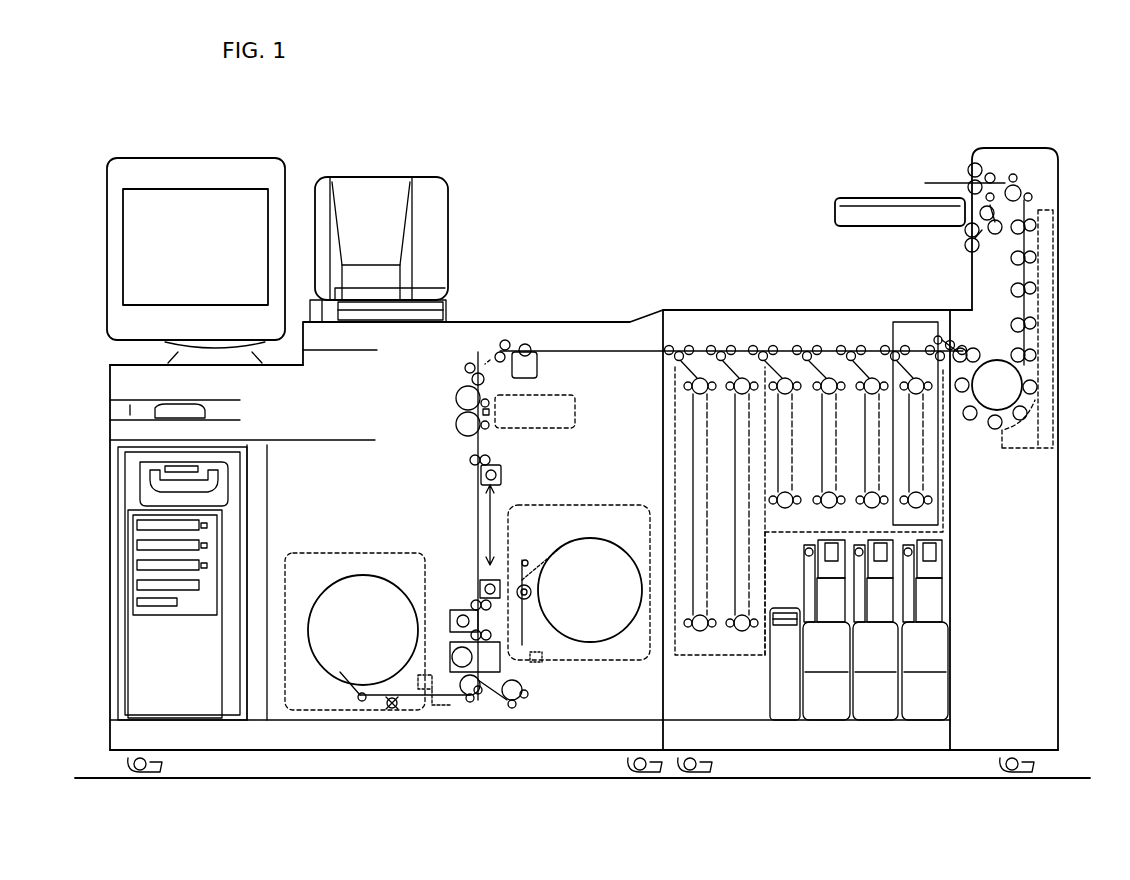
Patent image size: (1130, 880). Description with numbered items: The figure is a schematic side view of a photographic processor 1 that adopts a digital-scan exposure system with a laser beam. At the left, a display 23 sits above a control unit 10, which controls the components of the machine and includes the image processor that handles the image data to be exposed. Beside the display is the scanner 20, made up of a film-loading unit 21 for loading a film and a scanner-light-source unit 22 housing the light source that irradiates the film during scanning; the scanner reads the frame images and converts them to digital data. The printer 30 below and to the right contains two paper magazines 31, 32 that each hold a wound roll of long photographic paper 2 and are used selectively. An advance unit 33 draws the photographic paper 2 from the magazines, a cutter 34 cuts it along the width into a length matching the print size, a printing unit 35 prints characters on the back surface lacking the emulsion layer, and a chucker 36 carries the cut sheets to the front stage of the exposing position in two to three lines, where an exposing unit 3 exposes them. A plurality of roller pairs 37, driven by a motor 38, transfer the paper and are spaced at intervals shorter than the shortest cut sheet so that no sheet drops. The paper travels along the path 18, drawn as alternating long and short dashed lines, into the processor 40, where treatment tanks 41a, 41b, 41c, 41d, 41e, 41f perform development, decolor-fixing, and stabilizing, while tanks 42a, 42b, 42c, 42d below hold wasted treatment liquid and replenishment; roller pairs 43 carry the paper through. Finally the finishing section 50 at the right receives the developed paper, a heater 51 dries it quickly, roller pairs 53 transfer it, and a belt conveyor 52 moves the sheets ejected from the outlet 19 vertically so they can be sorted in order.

The photographic processor 1 is at (766, 157).
The photographic paper 2 is at (583, 642).
The exposing unit 3 is at (545, 430).
The control unit 10 is at (118, 676).
The path 18 is at (577, 352).
The outlet 19 is at (963, 170).
The scanner 20 is at (320, 162).
The film-loading unit 21 is at (445, 305).
The scanner-light-source unit 22 is at (372, 178).
The display 23 is at (190, 160).
The printer 30 is at (508, 215).
The paper magazine 31 is at (335, 553).
The paper magazine 32 is at (595, 505).
The advance unit 33 is at (439, 714).
The cutter 34 is at (448, 650).
The printing unit 35 is at (462, 605).
The chucker 36 is at (500, 468).
The roller pairs 37 is at (463, 385).
The motor 38 is at (540, 365).
The processor 40 is at (677, 266).
The treatment tank 41a is at (698, 645).
The treatment tank 41b is at (742, 645).
The treatment tank 41c is at (790, 508).
The treatment tank 41d is at (822, 510).
The treatment tank 41e is at (872, 520).
The treatment tank 41f is at (935, 505).
The tank 42a is at (785, 710).
The tank 42b is at (835, 710).
The tank 42c is at (883, 710).
The tank 42d is at (935, 710).
The roller pairs 43 is at (895, 352).
The finishing section 50 is at (1060, 144).
The heater 51 is at (1030, 448).
The belt conveyor 52 is at (880, 200).
The roller pairs 53 is at (1035, 292).